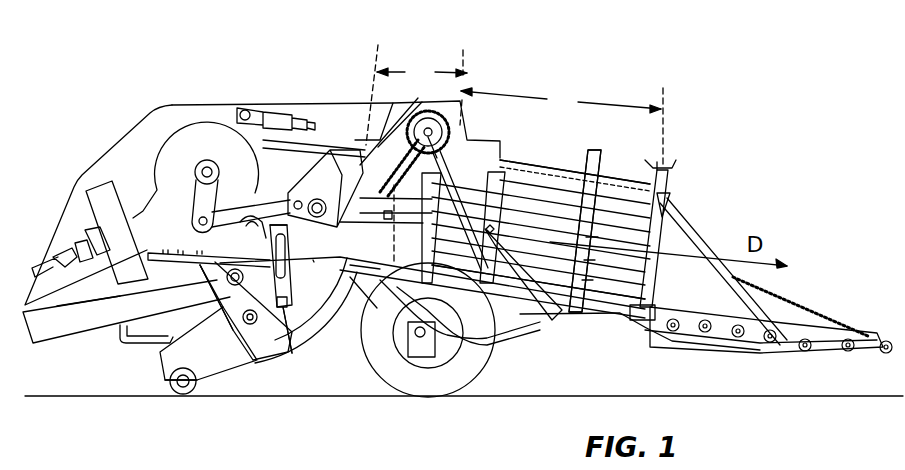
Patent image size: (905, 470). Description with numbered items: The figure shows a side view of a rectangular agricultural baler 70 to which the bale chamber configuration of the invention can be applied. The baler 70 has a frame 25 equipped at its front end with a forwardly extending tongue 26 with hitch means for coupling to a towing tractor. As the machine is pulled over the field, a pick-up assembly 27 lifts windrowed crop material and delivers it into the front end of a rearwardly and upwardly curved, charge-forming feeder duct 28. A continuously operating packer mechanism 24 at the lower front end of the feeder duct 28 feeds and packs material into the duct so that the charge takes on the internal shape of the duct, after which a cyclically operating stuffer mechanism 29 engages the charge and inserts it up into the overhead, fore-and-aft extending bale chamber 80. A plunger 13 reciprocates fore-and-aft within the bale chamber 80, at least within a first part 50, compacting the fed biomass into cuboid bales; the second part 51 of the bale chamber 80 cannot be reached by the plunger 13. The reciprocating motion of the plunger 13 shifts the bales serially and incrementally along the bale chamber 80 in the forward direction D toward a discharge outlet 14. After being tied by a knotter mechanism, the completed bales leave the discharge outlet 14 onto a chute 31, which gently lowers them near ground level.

The plunger 13 is at (333, 182).
The discharge outlet 14 is at (667, 244).
The packer mechanism 24 is at (293, 332).
The frame 25 is at (313, 260).
The tongue 26 is at (83, 320).
The pick-up assembly 27 is at (222, 381).
The feeder duct 28 is at (292, 353).
The stuffer mechanism 29 is at (290, 310).
The chute 31 is at (807, 299).
The first part 50 is at (422, 71).
The second part 51 is at (561, 101).
The agricultural baler 70 is at (620, 80).
The bale chamber 80 is at (607, 212).